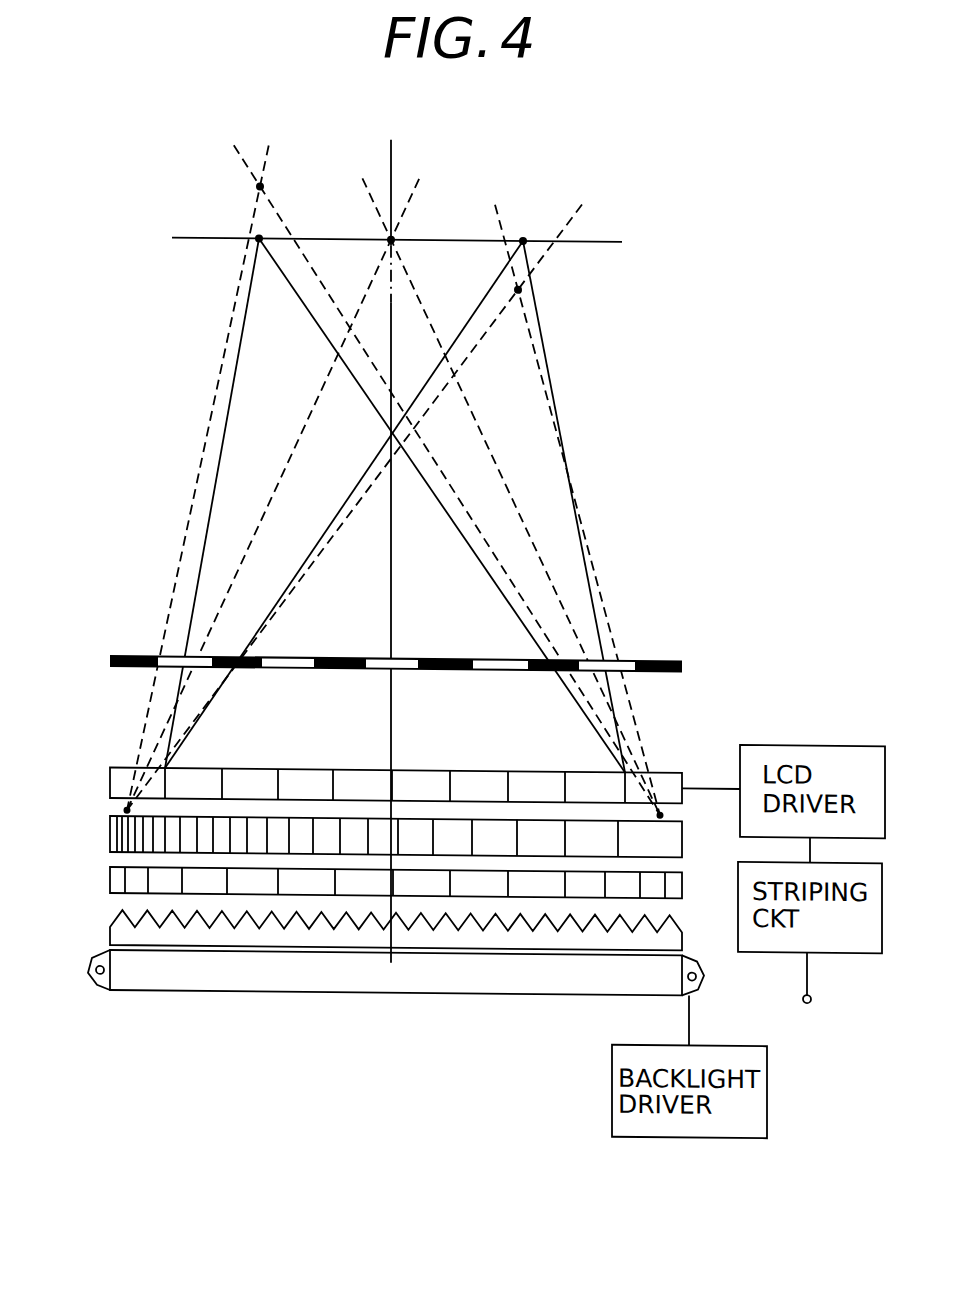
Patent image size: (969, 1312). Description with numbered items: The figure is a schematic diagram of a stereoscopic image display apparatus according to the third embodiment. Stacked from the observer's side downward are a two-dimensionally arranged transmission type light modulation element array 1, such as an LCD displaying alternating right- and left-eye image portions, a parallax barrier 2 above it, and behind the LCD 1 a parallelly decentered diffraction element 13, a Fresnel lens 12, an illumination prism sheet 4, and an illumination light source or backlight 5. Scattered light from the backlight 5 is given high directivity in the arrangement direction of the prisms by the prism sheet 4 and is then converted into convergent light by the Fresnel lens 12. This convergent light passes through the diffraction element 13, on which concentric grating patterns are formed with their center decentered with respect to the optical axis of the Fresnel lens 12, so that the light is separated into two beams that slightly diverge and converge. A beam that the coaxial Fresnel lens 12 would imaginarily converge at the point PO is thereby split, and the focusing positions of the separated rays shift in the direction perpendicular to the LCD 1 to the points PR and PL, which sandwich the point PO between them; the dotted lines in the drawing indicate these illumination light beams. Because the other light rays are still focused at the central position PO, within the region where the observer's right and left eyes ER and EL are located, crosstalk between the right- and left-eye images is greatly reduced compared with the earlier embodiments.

The transmission type light modulation element array 1 is at (110, 783).
The parallax barrier 2 is at (110, 662).
The illumination prism sheet 4 is at (110, 933).
The illumination light source (backlight) 5 is at (128, 990).
The Fresnel lens 12 is at (110, 878).
The parallelly decentered diffraction element 13 is at (110, 837).
The right eye ER is at (257, 237).
The left eye EL is at (522, 225).
The imaginary focal point PO is at (393, 237).
The imaginary focal point PR is at (283, 185).
The imaginary focal point PL is at (522, 286).